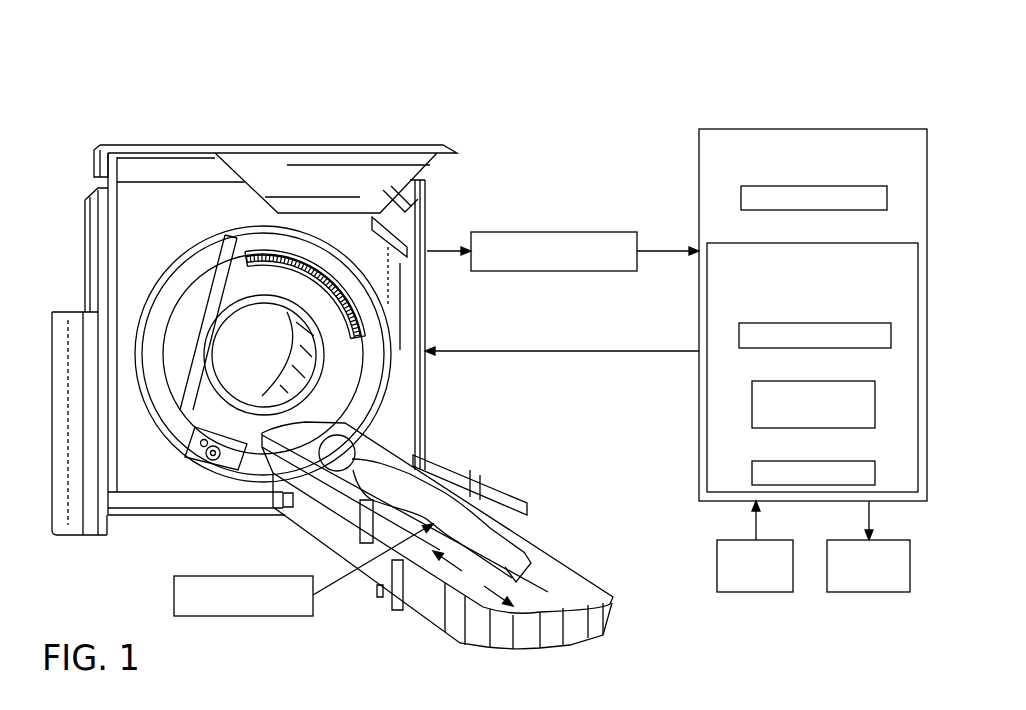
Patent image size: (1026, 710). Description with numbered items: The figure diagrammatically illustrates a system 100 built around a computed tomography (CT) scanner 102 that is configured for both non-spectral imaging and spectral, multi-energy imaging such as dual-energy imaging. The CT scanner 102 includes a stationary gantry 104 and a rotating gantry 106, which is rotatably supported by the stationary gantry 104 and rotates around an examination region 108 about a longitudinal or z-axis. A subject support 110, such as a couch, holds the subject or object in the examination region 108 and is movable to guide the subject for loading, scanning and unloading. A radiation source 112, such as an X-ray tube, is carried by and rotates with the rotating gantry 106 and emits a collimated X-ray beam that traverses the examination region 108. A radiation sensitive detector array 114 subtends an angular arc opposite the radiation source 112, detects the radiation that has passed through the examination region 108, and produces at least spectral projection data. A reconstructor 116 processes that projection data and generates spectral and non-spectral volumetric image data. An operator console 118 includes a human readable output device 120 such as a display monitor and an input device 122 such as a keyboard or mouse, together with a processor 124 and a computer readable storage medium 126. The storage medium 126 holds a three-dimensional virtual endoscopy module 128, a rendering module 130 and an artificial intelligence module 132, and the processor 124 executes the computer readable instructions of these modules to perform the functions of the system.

The system 100 is at (88, 110).
The computed tomography (CT) scanner 102 is at (104, 135).
The stationary gantry 104 is at (95, 250).
The rotating gantry 106 is at (237, 283).
The examination region 108 is at (262, 363).
The subject support 110 is at (563, 575).
The radiation source 112 is at (212, 461).
The radiation sensitive detector array 114 is at (353, 300).
The reconstructor 116 is at (552, 232).
The operator console 118 is at (815, 129).
The human readable output device 120 is at (870, 592).
The input device 122 is at (755, 592).
The processor 124 is at (815, 186).
The computer readable storage medium 126 is at (815, 243).
The 3-D virtual endoscopy (VE) module 128 is at (815, 323).
The rendering module 130 is at (815, 381).
The artificial intelligence (AI) module 132 is at (815, 461).